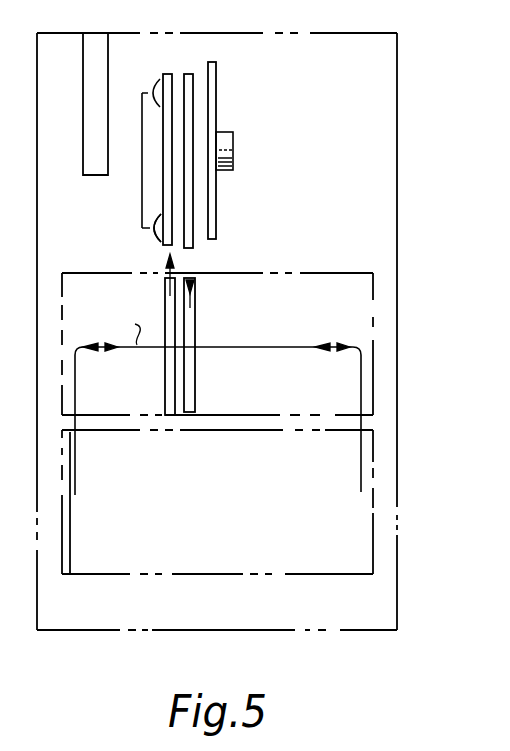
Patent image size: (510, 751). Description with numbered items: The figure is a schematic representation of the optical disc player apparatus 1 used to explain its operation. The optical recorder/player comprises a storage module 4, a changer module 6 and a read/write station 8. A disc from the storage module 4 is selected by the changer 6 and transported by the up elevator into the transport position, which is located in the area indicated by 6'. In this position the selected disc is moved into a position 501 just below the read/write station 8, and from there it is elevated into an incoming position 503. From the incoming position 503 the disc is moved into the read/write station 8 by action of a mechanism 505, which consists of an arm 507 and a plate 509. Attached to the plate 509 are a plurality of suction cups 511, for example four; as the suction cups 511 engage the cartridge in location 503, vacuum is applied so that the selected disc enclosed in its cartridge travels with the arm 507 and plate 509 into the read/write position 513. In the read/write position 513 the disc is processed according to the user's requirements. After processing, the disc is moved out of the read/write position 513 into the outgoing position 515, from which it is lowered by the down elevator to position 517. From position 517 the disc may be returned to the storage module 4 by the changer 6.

The apparatus 1 is at (431, 328).
The storage module 4 is at (372, 540).
The changer module 6 is at (250, 396).
The transport position area 6' is at (217, 323).
The read/write station 8 is at (233, 148).
The position just below the read/write station 501 is at (165, 383).
The incoming position 503 is at (165, 73).
The mechanism 505 is at (102, 176).
The arm 507 is at (90, 118).
The plate 509 is at (142, 228).
The suction cups 511 is at (152, 247).
The read/write position 513 is at (216, 72).
The outgoing position 515 is at (187, 73).
The position reached by the down elevator 517 is at (196, 388).